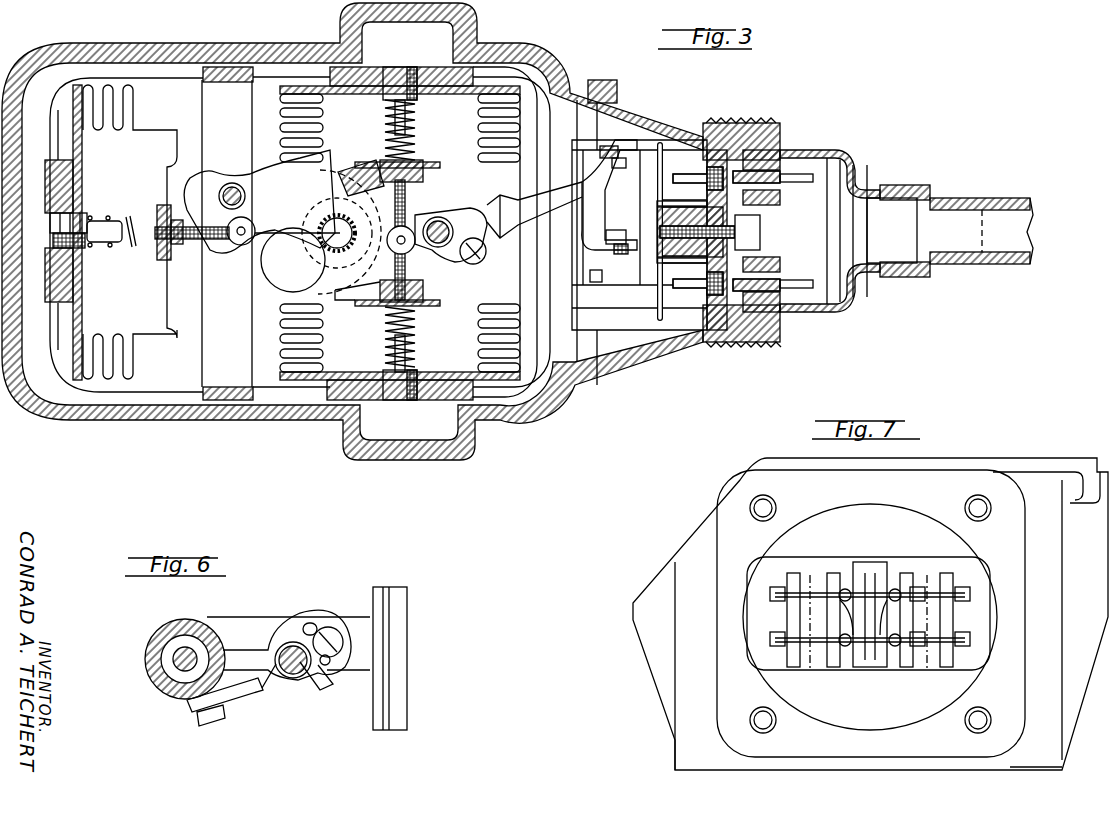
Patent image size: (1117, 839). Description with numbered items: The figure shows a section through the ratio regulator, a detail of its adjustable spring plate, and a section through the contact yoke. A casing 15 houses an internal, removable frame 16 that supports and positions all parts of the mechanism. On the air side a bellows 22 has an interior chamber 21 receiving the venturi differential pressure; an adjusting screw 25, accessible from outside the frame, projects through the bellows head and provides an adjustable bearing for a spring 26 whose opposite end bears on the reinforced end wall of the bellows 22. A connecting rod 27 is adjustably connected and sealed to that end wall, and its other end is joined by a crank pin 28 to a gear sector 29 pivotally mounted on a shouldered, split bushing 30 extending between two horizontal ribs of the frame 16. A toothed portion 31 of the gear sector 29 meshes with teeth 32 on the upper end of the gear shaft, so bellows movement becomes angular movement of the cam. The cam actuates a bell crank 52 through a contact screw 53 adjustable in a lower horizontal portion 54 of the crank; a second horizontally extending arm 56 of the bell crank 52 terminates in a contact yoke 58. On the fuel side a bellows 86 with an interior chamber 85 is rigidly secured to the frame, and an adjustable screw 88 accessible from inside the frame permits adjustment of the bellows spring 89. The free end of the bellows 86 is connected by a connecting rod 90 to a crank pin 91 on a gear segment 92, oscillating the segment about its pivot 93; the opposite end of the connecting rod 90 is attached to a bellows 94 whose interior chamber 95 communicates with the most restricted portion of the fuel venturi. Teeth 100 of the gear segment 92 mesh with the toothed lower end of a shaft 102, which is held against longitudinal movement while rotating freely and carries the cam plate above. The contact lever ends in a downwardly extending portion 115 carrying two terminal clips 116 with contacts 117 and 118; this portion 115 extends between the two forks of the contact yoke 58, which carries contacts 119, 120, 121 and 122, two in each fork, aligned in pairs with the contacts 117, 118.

In FIG. 3, the casing 15 is at (178, 424).
In FIG. 6, the frame 16 is at (166, 690).
In FIG. 3, the interior chamber 21 is at (125, 232).
In FIG. 3, the bellows 22 is at (148, 116).
In FIG. 3, the adjusting screw 25 is at (48, 248).
In FIG. 3, the spring 26 is at (130, 252).
In FIG. 3, the connecting rod 27 is at (212, 241).
In FIG. 3, the crank pin 28 is at (243, 247).
In FIG. 3, the gear sector 29 is at (282, 222).
In FIG. 3, the split bushing 30 is at (233, 183).
In FIG. 3, the toothed portion 31 is at (344, 172).
In FIG. 3, the teeth 32 is at (328, 240).
In FIG. 3, the bell crank 52 is at (415, 206).
In FIG. 3, the contact screw 53 is at (375, 168).
In FIG. 3, the lower horizontal portion 54 is at (384, 142).
In FIG. 3, the arm 56 is at (515, 200).
In FIG. 3, the contact yoke 58 is at (606, 146).
In FIG. 7, the contact yoke 58 is at (862, 668).
In FIG. 3, the interior chamber 85 is at (400, 233).
In FIG. 3, the bellows 86 is at (275, 330).
In FIG. 3, the adjustable screw 88 is at (403, 401).
In FIG. 3, the bellows spring 89 is at (383, 352).
In FIG. 3, the connecting rod 90 is at (410, 286).
In FIG. 3, the crank pin 91 is at (408, 214).
In FIG. 3, the gear segment 92 is at (380, 303).
In FIG. 3, the pivot 93 is at (452, 232).
In FIG. 6, the pivot 93 is at (290, 680).
In FIG. 3, the bellows 94 is at (478, 139).
In FIG. 3, the interior chamber 95 is at (371, 233).
In FIG. 3, the teeth 100 is at (345, 280).
In FIG. 6, the shaft 102 is at (188, 645).
In FIG. 3, the downwardly extending portion 115 is at (598, 246).
In FIG. 7, the downwardly extending portion 115 is at (878, 575).
In FIG. 7, the terminal clips 116 is at (790, 622).
In FIG. 7, the contact 117 is at (892, 664).
In FIG. 7, the contact 118 is at (893, 585).
In FIG. 7, the contact 119 is at (835, 664).
In FIG. 7, the contact 120 is at (848, 588).
In FIG. 7, the contact 121 is at (898, 648).
In FIG. 7, the contact 122 is at (905, 590).